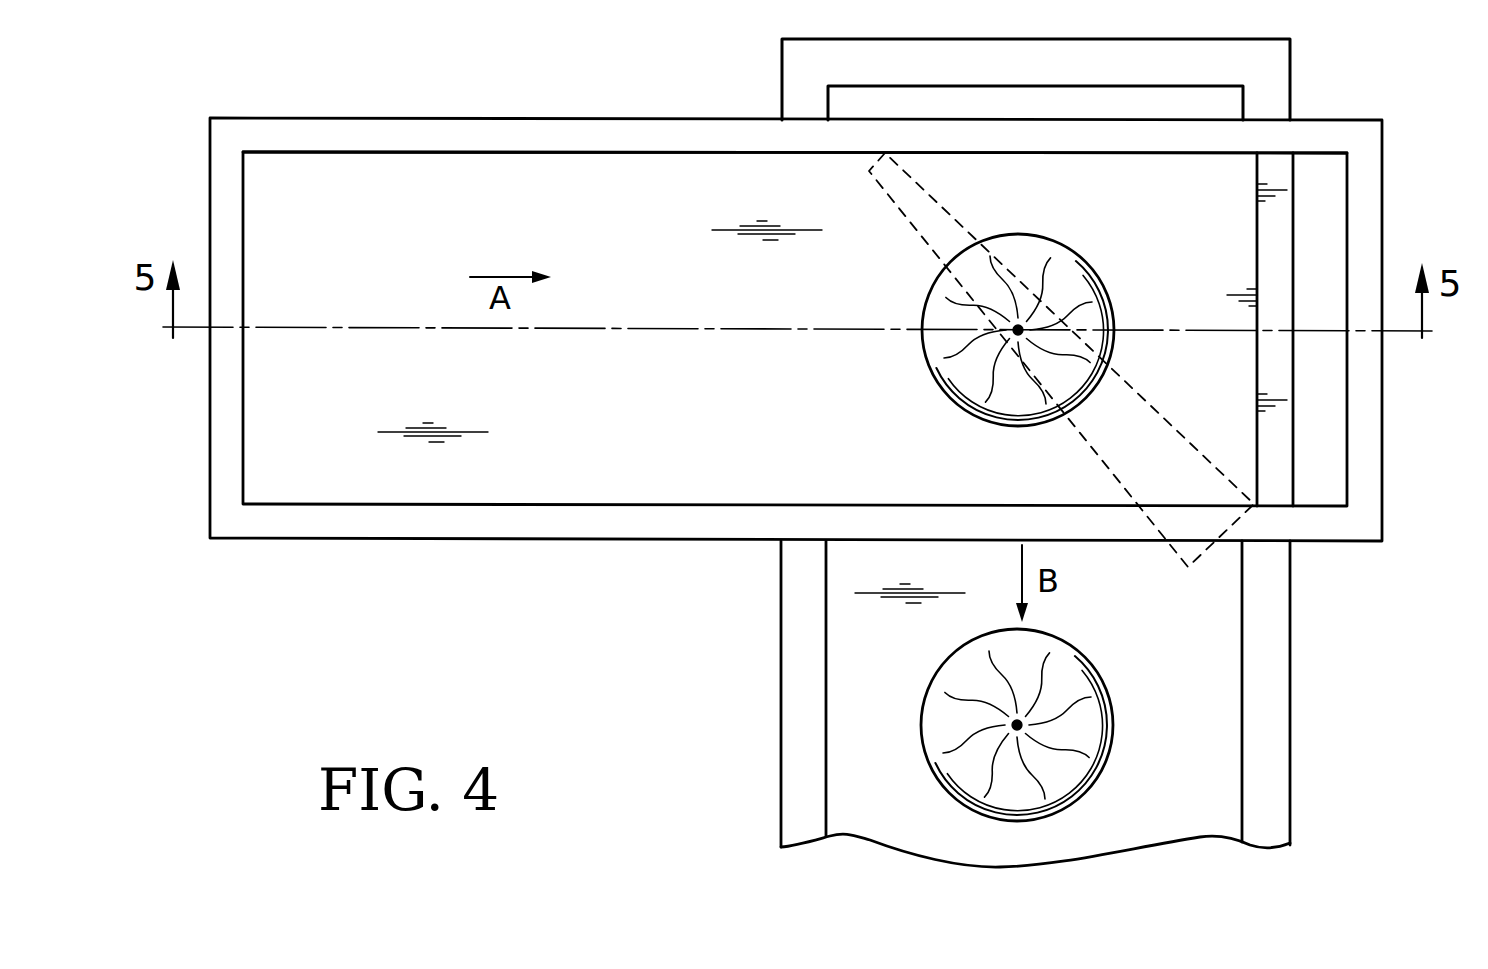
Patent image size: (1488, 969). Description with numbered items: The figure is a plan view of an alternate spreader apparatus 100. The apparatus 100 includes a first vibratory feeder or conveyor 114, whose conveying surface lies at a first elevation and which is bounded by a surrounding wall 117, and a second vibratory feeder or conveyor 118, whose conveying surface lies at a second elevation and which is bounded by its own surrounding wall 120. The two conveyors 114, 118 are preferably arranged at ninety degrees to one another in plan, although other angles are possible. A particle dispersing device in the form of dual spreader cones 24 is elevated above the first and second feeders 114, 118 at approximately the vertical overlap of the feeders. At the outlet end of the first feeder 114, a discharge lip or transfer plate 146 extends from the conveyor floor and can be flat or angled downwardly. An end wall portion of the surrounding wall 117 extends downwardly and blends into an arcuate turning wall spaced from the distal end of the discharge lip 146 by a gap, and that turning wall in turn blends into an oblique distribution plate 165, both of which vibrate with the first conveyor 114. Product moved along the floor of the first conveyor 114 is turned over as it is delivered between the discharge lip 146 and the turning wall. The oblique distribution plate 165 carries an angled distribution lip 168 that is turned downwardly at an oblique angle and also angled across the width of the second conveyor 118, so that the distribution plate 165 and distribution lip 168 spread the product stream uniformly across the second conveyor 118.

The spreader apparatus 100 is at (645, 108).
The first vibratory feeder 114 is at (420, 177).
The surrounding wall 117 is at (527, 152).
The second vibratory feeder 118 is at (781, 695).
The surrounding wall 120 is at (826, 602).
The dual spreader cones 24 is at (1077, 253).
The oblique distribution plate 165 is at (1230, 249).
The discharge lip 146 is at (1275, 423).
The angled distribution lip 168 is at (1122, 465).